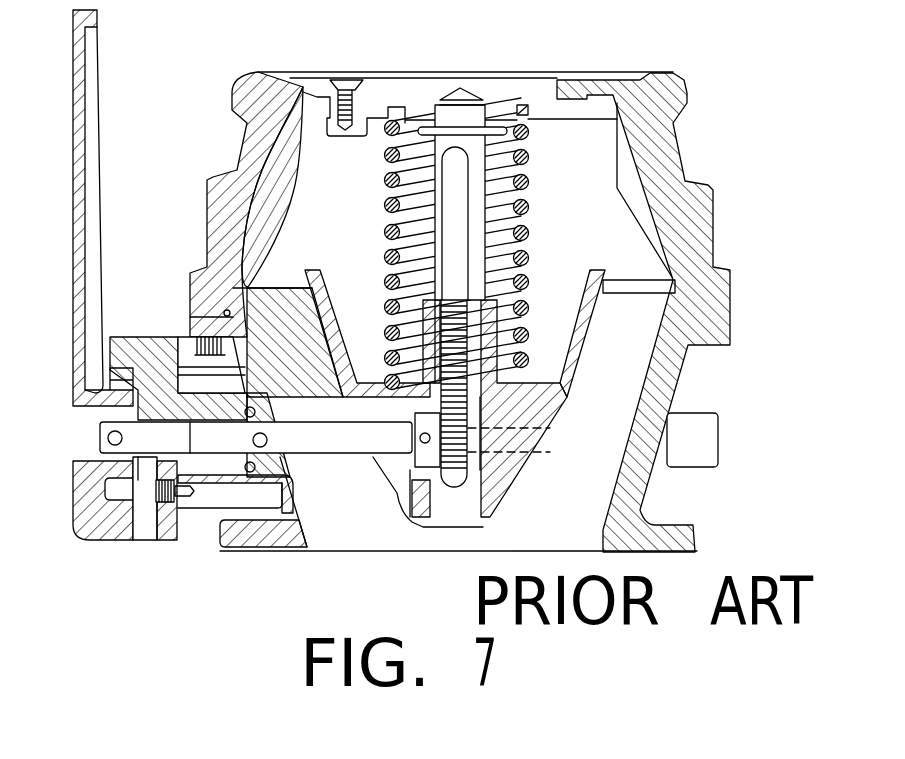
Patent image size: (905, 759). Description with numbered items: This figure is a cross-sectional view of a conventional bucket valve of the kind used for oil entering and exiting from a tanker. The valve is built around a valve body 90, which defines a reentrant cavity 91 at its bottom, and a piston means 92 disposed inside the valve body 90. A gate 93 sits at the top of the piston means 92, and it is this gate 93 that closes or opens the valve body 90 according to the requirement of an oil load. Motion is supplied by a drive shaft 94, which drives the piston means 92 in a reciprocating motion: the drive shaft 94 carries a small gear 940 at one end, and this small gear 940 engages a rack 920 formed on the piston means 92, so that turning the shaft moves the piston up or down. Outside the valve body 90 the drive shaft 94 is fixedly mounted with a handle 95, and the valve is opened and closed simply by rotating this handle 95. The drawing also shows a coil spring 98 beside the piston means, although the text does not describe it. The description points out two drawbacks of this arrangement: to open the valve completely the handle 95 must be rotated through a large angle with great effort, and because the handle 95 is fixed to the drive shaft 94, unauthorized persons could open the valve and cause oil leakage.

The valve body 90 is at (678, 370).
The reentrant cavity 91 is at (528, 445).
The piston means 92 is at (536, 287).
The rack 920 is at (463, 345).
The gate 93 is at (507, 90).
The drive shaft 94 is at (330, 445).
The small gear 940 is at (395, 500).
The handle 95 is at (100, 210).
The coil spring 98 is at (520, 183).